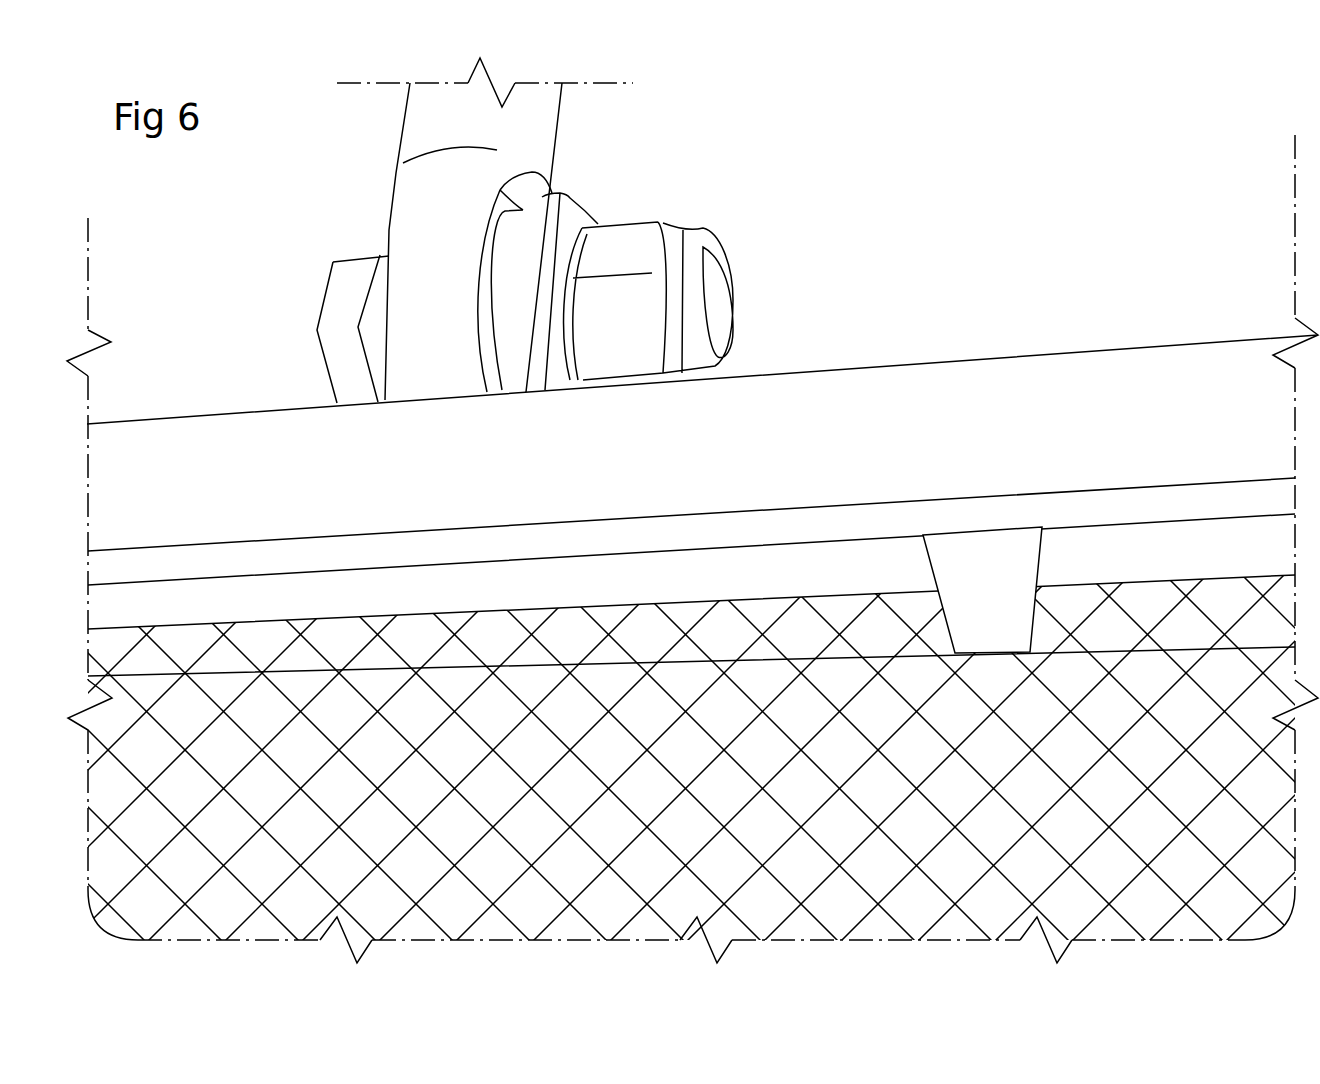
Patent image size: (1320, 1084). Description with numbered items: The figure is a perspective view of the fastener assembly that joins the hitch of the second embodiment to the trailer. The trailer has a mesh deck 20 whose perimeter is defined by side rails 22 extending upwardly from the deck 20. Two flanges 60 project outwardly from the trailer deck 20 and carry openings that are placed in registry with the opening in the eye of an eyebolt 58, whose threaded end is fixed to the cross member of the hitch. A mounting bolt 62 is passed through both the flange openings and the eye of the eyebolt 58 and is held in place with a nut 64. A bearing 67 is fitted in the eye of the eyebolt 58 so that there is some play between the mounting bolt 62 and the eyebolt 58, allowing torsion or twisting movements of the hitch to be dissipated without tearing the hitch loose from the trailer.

The mesh deck 20 is at (752, 778).
The side rails 22 is at (968, 415).
The eyebolt 58 is at (422, 225).
The flanges 60 is at (580, 222).
The mounting bolt 62 is at (343, 298).
The nut 64 is at (637, 248).
The bearing 67 is at (523, 232).